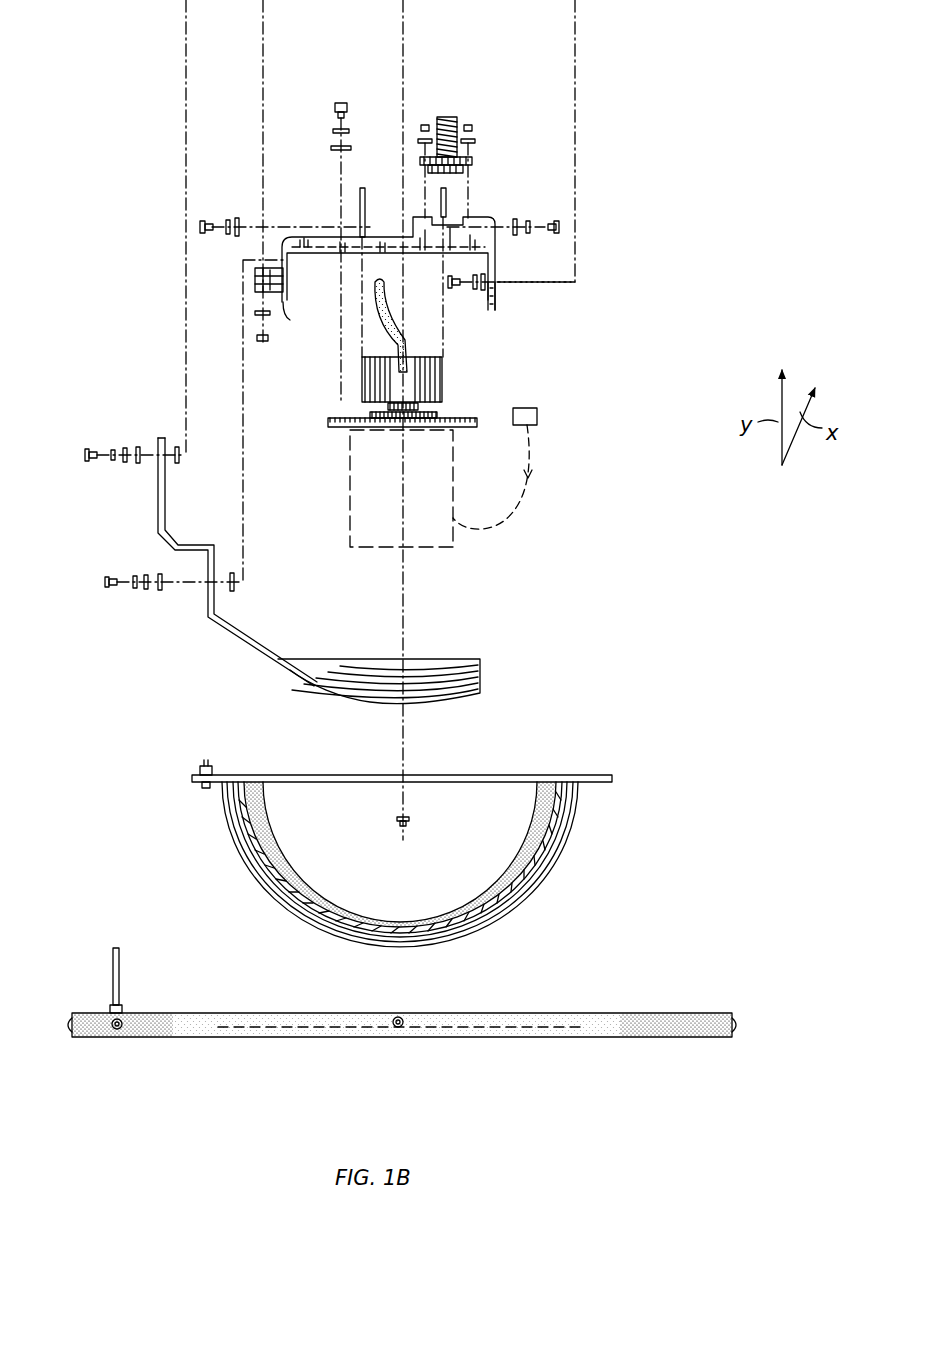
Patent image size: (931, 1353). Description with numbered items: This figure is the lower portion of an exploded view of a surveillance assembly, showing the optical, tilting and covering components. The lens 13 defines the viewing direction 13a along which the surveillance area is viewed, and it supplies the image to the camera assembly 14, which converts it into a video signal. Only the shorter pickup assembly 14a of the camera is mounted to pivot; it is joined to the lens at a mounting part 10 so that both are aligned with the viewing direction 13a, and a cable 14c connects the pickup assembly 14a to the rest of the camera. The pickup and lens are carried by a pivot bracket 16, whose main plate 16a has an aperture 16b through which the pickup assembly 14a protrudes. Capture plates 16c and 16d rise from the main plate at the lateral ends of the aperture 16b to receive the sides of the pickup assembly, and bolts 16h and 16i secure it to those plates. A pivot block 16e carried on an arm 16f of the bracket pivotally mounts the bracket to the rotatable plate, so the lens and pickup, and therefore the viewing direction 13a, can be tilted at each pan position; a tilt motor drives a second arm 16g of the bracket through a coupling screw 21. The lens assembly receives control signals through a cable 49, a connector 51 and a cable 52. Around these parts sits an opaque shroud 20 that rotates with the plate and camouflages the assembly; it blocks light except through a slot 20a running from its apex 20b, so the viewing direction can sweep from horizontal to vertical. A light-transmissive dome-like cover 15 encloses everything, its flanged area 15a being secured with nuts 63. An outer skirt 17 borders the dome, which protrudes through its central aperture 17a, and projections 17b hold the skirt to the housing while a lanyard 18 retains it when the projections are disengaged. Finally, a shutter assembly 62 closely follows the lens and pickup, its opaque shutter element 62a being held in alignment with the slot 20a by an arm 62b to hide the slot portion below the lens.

The mounting part 10 is at (452, 413).
The lens 13 is at (455, 472).
The viewing direction 13a is at (406, 606).
The camera assembly 14 is at (464, 368).
The pickup assembly 14a is at (442, 379).
The cable 14c is at (397, 372).
The dome-like cover 15 is at (388, 872).
The flanged area 15a is at (217, 787).
The pivot bracket 16 is at (305, 233).
The main plate 16a is at (352, 254).
The aperture 16b is at (398, 254).
The capture plate 16c is at (362, 200).
The capture plate 16d is at (446, 205).
The pivot block 16e is at (256, 284).
The arm 16f is at (306, 321).
The second arm 16g is at (497, 308).
The bolt 16h is at (203, 221).
The bolt 16i is at (553, 229).
The outer skirt 17 is at (400, 1021).
The central aperture 17a is at (347, 1036).
The projections 17b is at (742, 1055).
The lanyard 18 is at (120, 965).
The shroud 20 is at (391, 883).
The slot 20a is at (368, 930).
The apex 20b is at (403, 937).
The coupling screw 21 is at (457, 290).
The cable 49 is at (452, 120).
The connector 51 is at (538, 415).
The cable 52 is at (522, 520).
The shutter assembly 62 is at (201, 562).
The shutter element 62a is at (332, 678).
The arm 62b is at (208, 598).
The nuts 63 is at (396, 824).